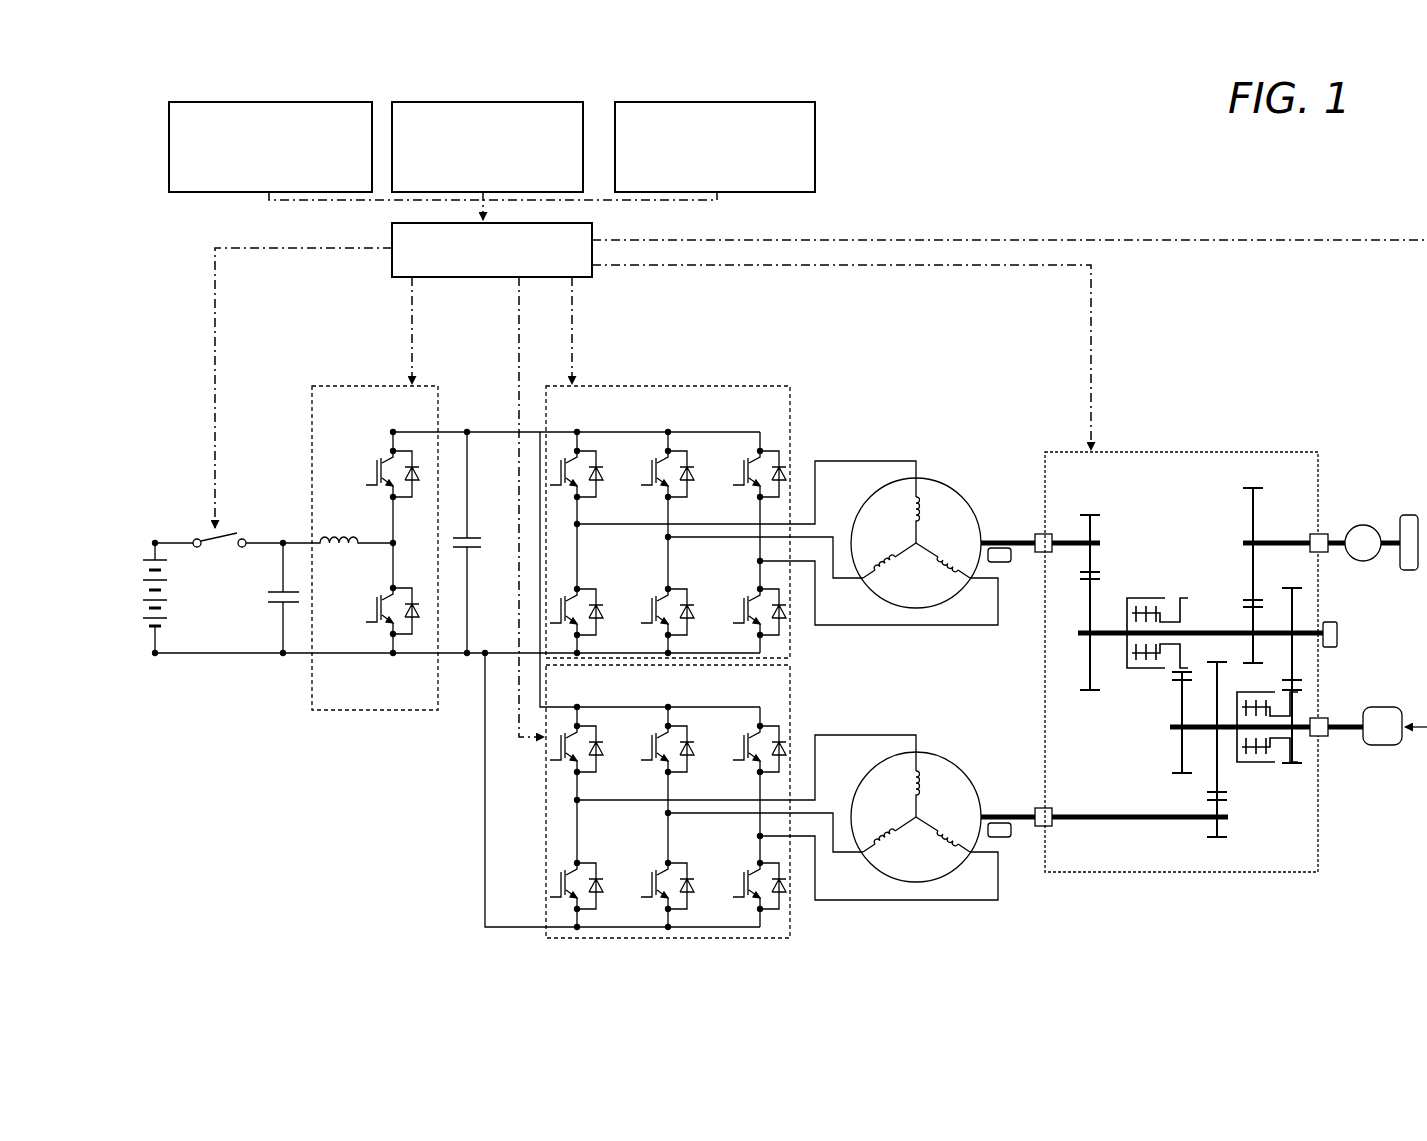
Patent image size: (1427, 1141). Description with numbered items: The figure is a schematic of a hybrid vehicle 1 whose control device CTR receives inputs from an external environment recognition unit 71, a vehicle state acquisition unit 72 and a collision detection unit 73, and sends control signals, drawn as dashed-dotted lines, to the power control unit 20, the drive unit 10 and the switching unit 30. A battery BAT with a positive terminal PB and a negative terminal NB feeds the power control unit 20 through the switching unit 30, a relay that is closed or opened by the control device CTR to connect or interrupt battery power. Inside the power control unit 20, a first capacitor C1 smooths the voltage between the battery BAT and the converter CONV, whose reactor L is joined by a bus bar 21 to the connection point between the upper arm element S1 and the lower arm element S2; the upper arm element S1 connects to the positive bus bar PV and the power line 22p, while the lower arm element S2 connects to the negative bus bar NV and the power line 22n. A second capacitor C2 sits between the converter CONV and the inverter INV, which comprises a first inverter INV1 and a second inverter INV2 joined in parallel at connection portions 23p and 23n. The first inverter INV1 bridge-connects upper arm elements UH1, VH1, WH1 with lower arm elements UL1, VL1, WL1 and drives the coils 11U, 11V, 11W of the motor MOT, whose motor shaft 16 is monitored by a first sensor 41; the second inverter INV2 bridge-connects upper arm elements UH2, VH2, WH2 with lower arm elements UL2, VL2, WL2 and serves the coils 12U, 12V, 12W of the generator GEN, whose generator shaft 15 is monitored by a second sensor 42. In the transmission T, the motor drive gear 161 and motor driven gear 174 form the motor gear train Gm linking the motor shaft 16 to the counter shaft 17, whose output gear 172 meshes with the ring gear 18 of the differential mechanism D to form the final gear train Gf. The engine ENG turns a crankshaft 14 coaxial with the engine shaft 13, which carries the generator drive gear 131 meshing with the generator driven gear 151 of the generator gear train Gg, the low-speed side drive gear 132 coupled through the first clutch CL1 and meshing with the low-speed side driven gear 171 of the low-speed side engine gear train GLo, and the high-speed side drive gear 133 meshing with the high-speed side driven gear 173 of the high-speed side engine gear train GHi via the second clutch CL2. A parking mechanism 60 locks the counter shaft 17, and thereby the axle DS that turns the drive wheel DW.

The vehicle 1 is at (141, 131).
The external environment recognition unit 71 is at (276, 102).
The vehicle state acquisition unit 72 is at (488, 102).
The collision detection unit 73 is at (720, 102).
The control device CTR is at (592, 277).
The power control unit 20 is at (633, 344).
The drive unit 10 is at (1011, 372).
The battery BAT is at (145, 552).
The positive terminal PB is at (156, 540).
The negative terminal NB is at (155, 656).
The switching unit 30 is at (214, 545).
The first capacitor C1 is at (273, 595).
The converter CONV is at (312, 699).
The reactor L is at (345, 535).
The bus bar 21 is at (377, 551).
The positive bus bar PV is at (394, 432).
The upper arm element S1 is at (412, 435).
The lower arm element S2 is at (408, 584).
The negative bus bar NV is at (392, 656).
The power line 22p is at (462, 432).
The power line 22n is at (455, 657).
The connection portion 23p is at (540, 436).
The connection portion 23n is at (486, 652).
The second capacitor C2 is at (470, 537).
The inverter INV is at (410, 743).
The first inverter INV1 is at (540, 640).
The second inverter INV2 is at (546, 781).
The U-phase upper arm element UH1 is at (590, 442).
The V-phase upper arm element VH1 is at (682, 442).
The W-phase upper arm element WH1 is at (768, 442).
The U-phase lower arm element UL1 is at (594, 586).
The V-phase lower arm element VL1 is at (683, 588).
The W-phase lower arm element WL1 is at (745, 588).
The U-phase upper arm element UH2 is at (590, 718).
The V-phase upper arm element VH2 is at (682, 718).
The W-phase upper arm element WH2 is at (768, 718).
The U-phase lower arm element UL2 is at (594, 858).
The V-phase lower arm element VL2 is at (683, 860).
The W-phase lower arm element WL2 is at (745, 860).
The motor MOT is at (963, 500).
The coil 11U is at (923, 519).
The coil 11V is at (884, 560).
The coil 11W is at (940, 564).
The motor shaft 16 is at (1016, 539).
The first sensor 41 is at (1005, 563).
The generator GEN is at (967, 777).
The coil 12U is at (923, 793).
The coil 12V is at (884, 834).
The coil 12W is at (940, 838).
The generator shaft 15 is at (1088, 817).
The second sensor 42 is at (1005, 838).
The transmission T is at (1180, 881).
The motor gear train Gm is at (1150, 518).
The motor drive gear 161 is at (1094, 519).
The motor driven gear 174 is at (1096, 579).
The counter shaft 17 is at (1108, 632).
The final gear train Gf is at (1172, 462).
The ring gear 18 is at (1240, 488).
The output gear 172 is at (1245, 600).
The second clutch CL2 is at (1158, 597).
The first clutch CL1 is at (1243, 677).
The high-speed side engine gear train GHi is at (1115, 700).
The high-speed side driven gear 173 is at (1170, 682).
The high-speed side drive gear 133 is at (1175, 769).
The engine shaft 13 is at (1202, 734).
The crankshaft 14 is at (1345, 737).
The engine ENG is at (1383, 747).
The low-speed side engine gear train GLo is at (1368, 648).
The low-speed side driven gear 171 is at (1296, 680).
The low-speed side drive gear 132 is at (1300, 691).
The parking mechanism 60 is at (1340, 634).
The generator gear train Gg is at (1278, 783).
The generator drive gear 131 is at (1225, 794).
The generator driven gear 151 is at (1227, 801).
The axle DS is at (1391, 537).
The differential mechanism D is at (1363, 557).
The drive wheel DW is at (1410, 562).